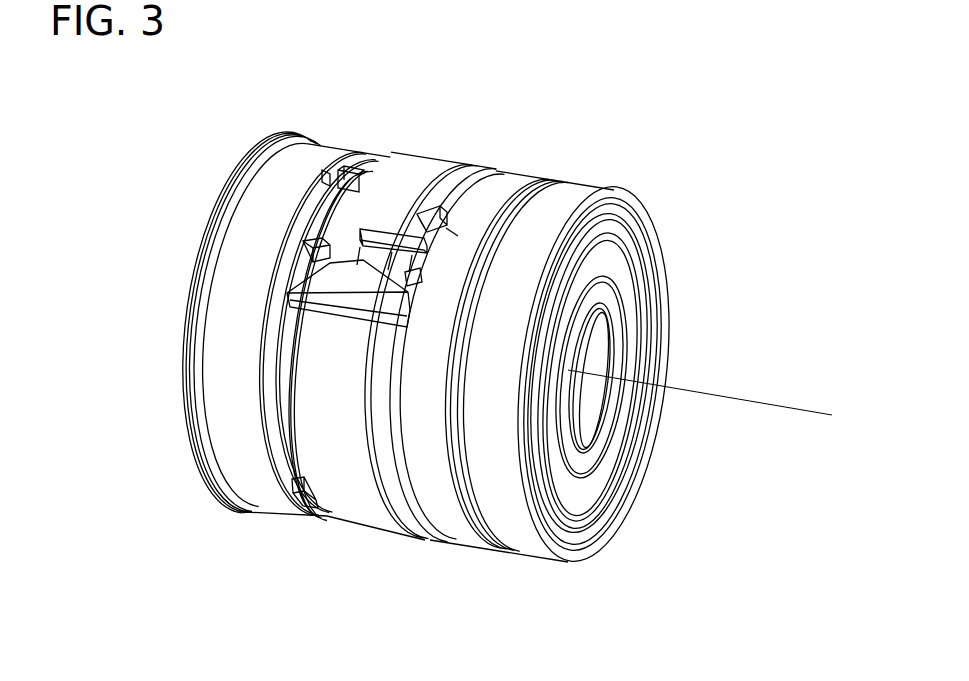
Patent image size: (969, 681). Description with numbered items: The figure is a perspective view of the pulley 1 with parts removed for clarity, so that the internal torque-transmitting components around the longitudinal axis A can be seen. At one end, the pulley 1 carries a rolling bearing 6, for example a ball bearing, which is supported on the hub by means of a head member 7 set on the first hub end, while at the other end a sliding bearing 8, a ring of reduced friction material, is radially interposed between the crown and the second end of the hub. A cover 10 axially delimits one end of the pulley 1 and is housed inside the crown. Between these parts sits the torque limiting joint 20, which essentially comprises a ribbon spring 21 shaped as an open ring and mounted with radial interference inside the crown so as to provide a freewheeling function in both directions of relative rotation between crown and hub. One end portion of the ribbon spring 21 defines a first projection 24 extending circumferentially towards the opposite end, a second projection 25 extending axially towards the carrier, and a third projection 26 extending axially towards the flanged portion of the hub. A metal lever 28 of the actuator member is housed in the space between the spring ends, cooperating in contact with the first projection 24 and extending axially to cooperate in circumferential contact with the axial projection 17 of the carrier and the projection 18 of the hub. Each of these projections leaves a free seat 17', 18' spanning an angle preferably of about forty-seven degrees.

The pulley 1 is at (487, 340).
The rolling bearing 6 is at (528, 549).
The head member 7 is at (575, 182).
The sliding bearing 8 is at (324, 148).
The cover 10 is at (298, 134).
The axial projection 17 is at (469, 163).
The free seat 17' is at (465, 295).
The projection 18 is at (371, 141).
The free seat 18' is at (254, 166).
The torque limiting joint 20 is at (443, 150).
The ribbon spring 21 is at (351, 526).
The first projection 24 is at (333, 272).
The second projection 25 is at (452, 232).
The third projection 26 is at (323, 224).
The metal lever 28 is at (383, 306).
The longitudinal axis A is at (808, 360).